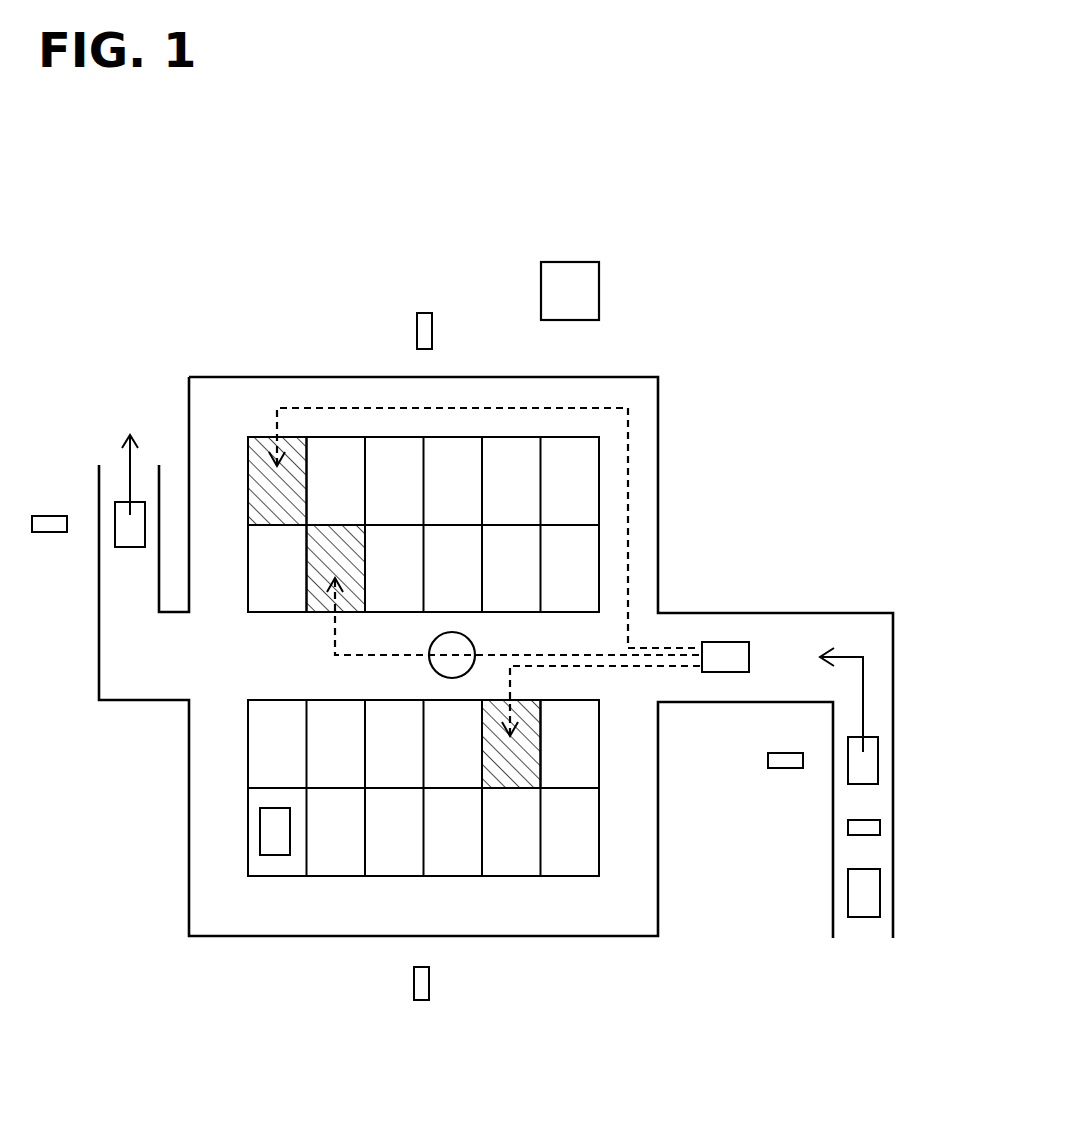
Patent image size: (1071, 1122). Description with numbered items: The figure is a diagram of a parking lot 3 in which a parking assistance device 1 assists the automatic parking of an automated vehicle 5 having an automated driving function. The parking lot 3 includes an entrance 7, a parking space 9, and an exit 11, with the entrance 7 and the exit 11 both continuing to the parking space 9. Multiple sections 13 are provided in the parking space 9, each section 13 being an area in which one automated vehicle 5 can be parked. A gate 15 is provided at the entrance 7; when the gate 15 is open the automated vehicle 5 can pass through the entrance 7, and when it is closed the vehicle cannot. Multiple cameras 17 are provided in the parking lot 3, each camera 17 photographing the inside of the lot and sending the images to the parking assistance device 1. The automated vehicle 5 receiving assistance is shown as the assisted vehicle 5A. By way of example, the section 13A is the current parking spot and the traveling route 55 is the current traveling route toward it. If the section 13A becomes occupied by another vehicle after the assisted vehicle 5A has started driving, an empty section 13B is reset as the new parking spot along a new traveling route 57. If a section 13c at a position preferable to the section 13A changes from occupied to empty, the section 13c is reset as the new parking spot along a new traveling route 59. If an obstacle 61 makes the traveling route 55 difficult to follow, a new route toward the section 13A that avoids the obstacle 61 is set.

The parking assistance device 1 is at (600, 286).
The parking lot 3 is at (660, 405).
The automated vehicle 5 is at (126, 528).
The assisted vehicle 5A is at (726, 641).
The entrance 7 is at (882, 685).
The parking space 9 is at (353, 395).
The exit 11 is at (130, 588).
The sections 13 is at (520, 862).
The section 13A is at (337, 553).
The section 13B is at (262, 480).
The section 13c is at (527, 760).
The gate 15 is at (862, 826).
The camera 17 is at (426, 313).
The traveling route 55 is at (388, 658).
The traveling route 57 is at (503, 408).
The traveling route 59 is at (617, 666).
The obstacle 61 is at (436, 670).